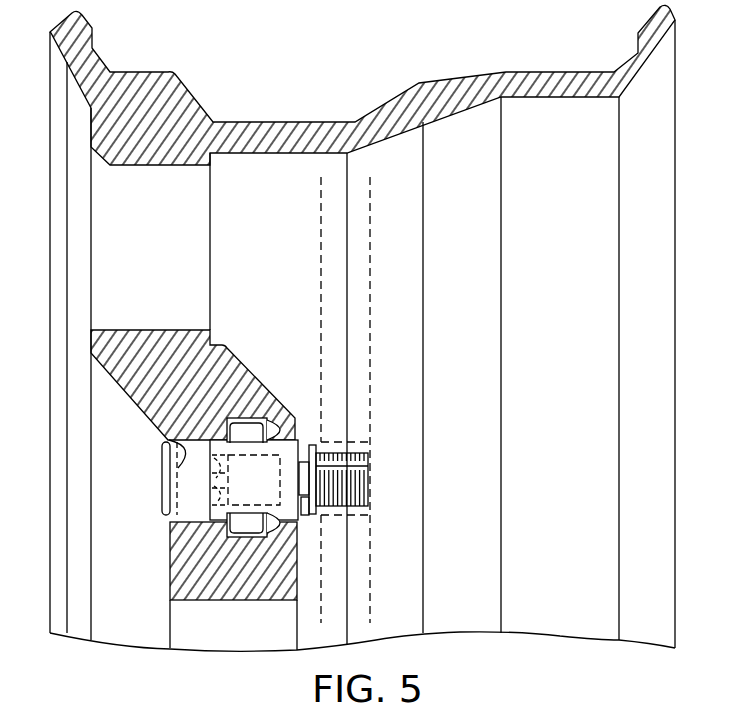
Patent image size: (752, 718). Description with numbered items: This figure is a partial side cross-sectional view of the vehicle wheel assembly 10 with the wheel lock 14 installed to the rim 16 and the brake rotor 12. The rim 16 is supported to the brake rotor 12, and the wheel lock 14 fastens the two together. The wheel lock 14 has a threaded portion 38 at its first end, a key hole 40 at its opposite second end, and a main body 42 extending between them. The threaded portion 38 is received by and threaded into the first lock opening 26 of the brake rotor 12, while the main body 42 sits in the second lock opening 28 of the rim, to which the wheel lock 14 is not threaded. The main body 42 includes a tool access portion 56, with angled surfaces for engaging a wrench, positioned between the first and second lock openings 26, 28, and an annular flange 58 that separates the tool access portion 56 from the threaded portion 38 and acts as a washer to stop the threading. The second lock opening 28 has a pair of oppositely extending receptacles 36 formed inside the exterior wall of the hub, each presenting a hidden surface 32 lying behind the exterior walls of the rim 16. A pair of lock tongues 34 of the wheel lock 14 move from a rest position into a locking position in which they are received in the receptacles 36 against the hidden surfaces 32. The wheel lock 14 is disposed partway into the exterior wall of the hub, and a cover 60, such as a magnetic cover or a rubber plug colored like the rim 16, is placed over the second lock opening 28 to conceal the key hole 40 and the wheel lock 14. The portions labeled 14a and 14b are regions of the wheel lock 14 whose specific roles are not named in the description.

The vehicle wheel assembly 10 is at (362, 328).
The brake rotor 12 is at (322, 236).
The wheel lock 14 is at (205, 380).
The hub body first portion 14a is at (370, 470).
The hub body second portion 14b is at (162, 512).
The rim 16 is at (199, 88).
The first lock opening 26 is at (393, 478).
The second lock opening 28 is at (168, 467).
The hidden surface 32 is at (277, 418).
The lock tongue 34 is at (248, 418).
The receptacle 36 is at (236, 418).
The threaded portion 38 is at (393, 465).
The key hole 40 is at (203, 490).
The main body 42 is at (300, 440).
The tool access portion 56 is at (305, 515).
The annular flange 58 is at (312, 515).
The cover 60 is at (162, 442).